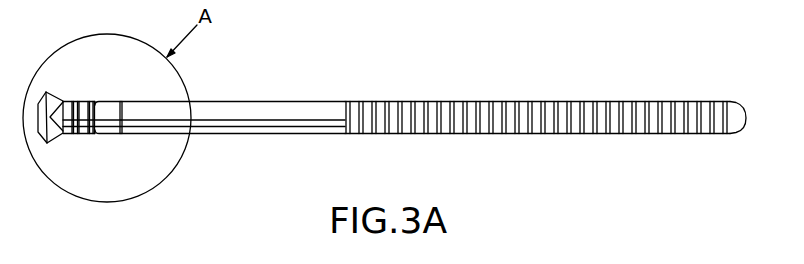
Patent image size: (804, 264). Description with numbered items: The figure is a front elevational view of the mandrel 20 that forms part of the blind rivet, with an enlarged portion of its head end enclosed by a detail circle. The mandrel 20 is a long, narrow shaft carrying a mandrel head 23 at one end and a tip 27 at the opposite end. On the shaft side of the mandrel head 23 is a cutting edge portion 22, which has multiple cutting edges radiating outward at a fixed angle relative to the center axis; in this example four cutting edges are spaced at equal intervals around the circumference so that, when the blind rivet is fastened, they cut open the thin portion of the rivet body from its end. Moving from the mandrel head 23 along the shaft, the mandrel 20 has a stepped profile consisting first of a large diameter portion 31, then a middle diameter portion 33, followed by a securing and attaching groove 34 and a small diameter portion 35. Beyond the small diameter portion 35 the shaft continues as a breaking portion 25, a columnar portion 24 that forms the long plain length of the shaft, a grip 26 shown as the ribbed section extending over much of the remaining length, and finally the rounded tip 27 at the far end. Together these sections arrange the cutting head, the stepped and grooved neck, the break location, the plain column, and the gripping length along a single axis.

The mandrel 20 is at (404, 98).
The cutting edge portion 22 is at (72, 100).
The mandrel head 23 is at (38, 133).
The columnar portion 24 is at (267, 110).
The breaking portion 25 is at (119, 134).
The grip 26 is at (522, 101).
The tip 27 is at (738, 102).
The large diameter portion 31 is at (80, 101).
The middle diameter portion 33 is at (89, 101).
The securing and attaching groove 34 is at (90, 129).
The small diameter portion 35 is at (107, 110).